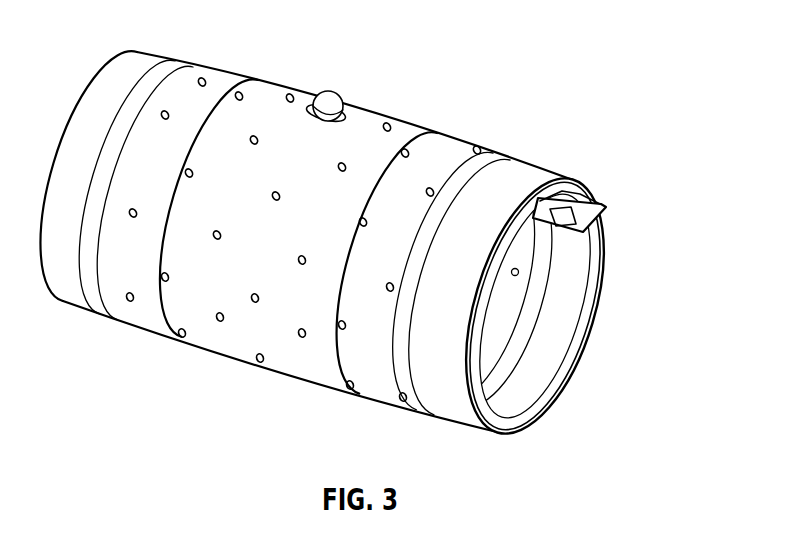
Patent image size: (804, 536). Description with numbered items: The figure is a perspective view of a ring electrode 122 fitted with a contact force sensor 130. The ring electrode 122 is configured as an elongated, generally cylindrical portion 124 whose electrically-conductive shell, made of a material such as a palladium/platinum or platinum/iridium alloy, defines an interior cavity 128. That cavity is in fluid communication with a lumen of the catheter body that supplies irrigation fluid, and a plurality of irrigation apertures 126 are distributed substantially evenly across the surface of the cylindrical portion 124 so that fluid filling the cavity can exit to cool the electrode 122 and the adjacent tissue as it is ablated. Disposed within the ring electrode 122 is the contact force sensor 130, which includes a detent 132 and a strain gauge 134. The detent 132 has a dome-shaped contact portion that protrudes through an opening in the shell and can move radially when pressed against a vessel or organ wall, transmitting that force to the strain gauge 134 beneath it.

The ring electrode 122 is at (597, 380).
The elongated, generally cylindrical portion 124 is at (533, 181).
The irrigation apertures 126 is at (204, 77).
The interior cavity 128 is at (592, 321).
The contact force sensor 130 is at (403, 88).
The detent 132 is at (328, 101).
The strain gauge 134 is at (604, 211).